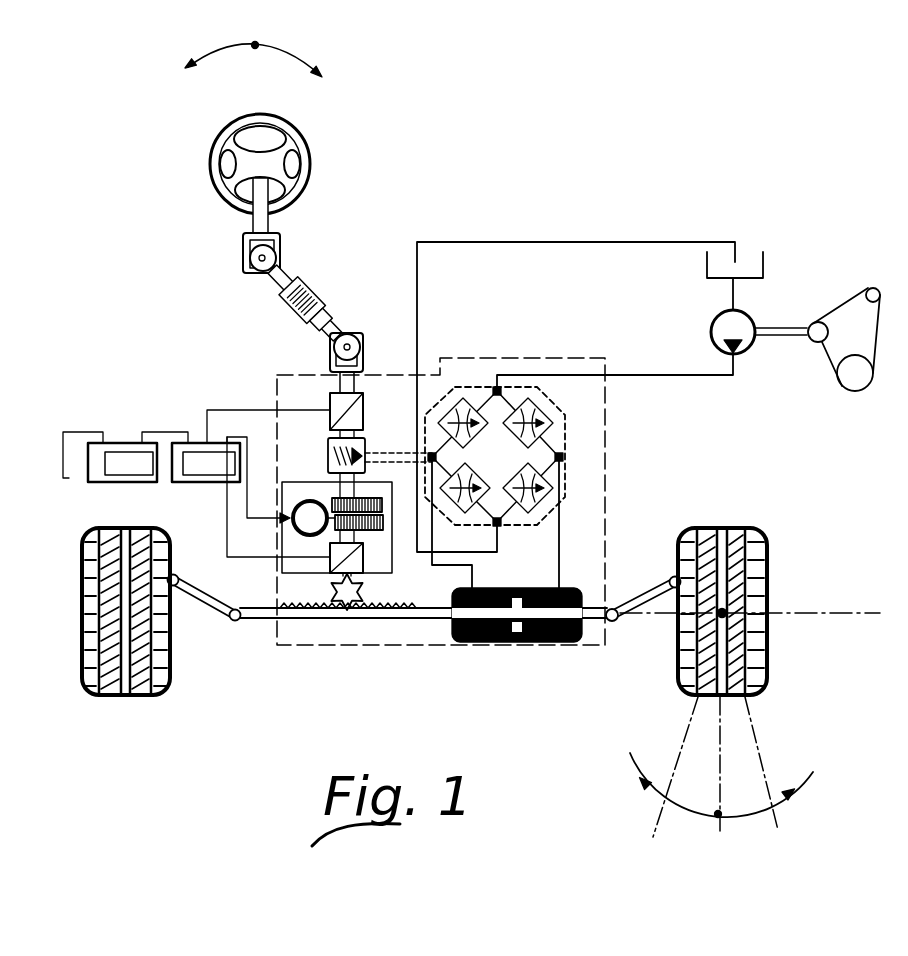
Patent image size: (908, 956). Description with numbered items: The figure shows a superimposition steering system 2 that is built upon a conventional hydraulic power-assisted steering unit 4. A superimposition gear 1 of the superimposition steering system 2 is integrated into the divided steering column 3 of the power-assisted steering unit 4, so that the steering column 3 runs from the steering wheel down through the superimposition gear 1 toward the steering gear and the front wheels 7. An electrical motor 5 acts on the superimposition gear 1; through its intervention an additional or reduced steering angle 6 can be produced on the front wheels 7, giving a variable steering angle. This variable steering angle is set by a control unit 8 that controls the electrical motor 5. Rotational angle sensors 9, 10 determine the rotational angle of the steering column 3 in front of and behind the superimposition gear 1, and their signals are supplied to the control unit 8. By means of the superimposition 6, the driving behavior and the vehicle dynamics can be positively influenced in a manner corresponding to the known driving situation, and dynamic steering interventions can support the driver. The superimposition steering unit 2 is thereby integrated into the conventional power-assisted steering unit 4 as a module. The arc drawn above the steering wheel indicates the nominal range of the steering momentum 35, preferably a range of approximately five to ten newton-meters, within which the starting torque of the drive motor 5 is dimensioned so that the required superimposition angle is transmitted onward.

The superimposition gear 1 is at (363, 537).
The superimposition steering system 2 is at (329, 514).
The steering column 3 is at (305, 372).
The power-assisted steering unit 4 is at (607, 447).
The electrical motor 5 is at (297, 535).
The steering angle 6 is at (742, 815).
The front wheels 7 is at (167, 657).
The control unit 8 is at (198, 442).
The rotational angle sensor 9 is at (330, 400).
The rotational angle sensor 10 is at (327, 567).
The steering momentum 35 is at (285, 50).